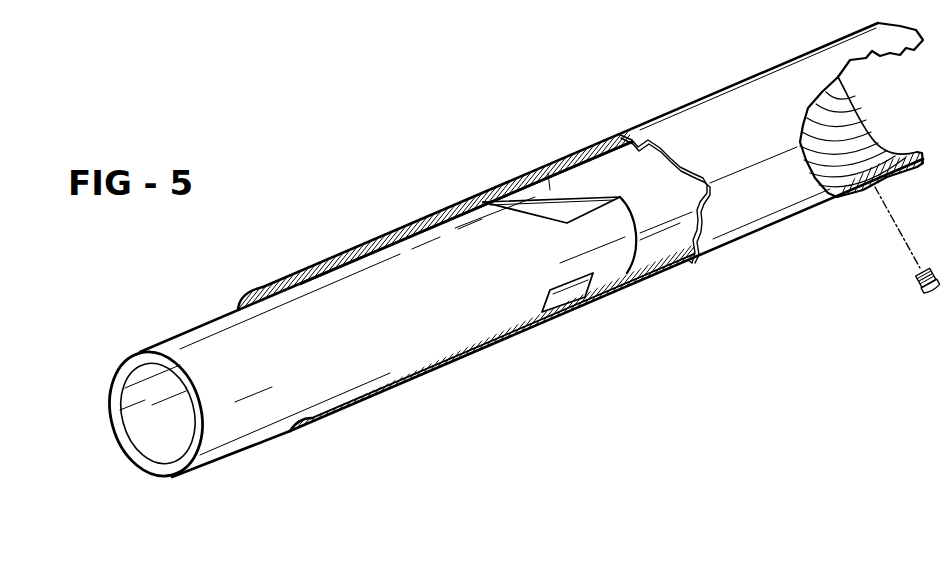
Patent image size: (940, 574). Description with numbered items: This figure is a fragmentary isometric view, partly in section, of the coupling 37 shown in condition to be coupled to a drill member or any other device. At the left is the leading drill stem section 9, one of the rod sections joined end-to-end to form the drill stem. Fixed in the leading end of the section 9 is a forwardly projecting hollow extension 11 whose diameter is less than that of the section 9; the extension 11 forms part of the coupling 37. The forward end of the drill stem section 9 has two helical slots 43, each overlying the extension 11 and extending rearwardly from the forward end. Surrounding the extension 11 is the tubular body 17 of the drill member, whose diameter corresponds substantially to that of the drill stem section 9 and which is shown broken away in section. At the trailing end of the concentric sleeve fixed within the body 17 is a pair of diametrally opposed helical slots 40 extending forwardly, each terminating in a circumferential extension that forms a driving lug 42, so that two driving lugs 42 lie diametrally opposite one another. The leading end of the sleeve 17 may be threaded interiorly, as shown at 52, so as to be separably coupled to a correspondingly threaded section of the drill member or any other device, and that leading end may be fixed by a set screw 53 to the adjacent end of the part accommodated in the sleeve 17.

The drill stem section 9 is at (178, 342).
The hollow extension 11 is at (658, 248).
The tubular body 17 is at (686, 102).
The coupling 37 is at (424, 402).
The helical slot 40 is at (548, 190).
The driving lug 42 is at (570, 299).
The helical slot 43 is at (560, 211).
The interior threading 52 is at (868, 138).
The set screw 53 is at (921, 300).